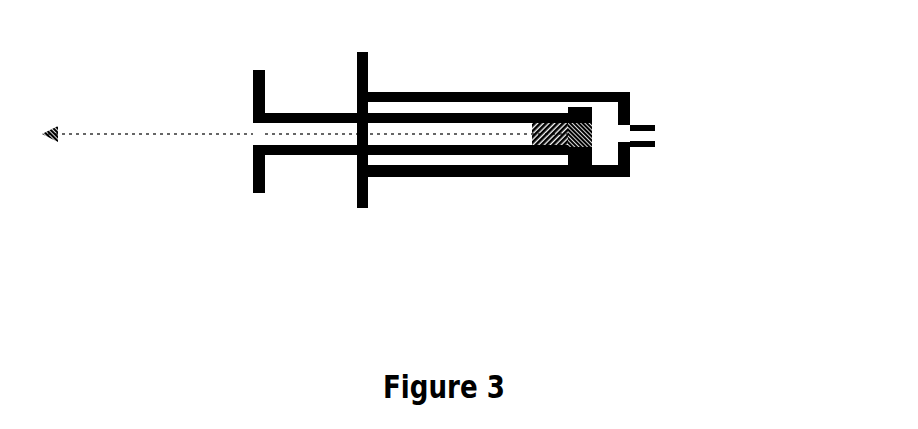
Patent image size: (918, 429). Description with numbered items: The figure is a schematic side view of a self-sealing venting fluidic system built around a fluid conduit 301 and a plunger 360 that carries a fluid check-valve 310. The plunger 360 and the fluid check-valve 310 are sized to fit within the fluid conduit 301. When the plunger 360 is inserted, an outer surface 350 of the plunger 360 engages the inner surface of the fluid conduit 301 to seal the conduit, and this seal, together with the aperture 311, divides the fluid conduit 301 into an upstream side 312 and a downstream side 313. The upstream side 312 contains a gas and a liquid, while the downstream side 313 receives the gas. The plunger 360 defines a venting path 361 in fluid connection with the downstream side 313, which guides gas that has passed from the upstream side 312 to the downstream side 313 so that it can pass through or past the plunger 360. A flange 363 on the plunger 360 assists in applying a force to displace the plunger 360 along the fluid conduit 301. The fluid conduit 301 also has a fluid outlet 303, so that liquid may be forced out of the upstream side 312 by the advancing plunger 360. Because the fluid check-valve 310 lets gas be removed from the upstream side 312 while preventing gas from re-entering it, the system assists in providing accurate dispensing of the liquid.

The fluid conduit 301 is at (527, 93).
The fluid outlet 303 is at (663, 134).
The fluid check-valve 310 is at (557, 157).
The aperture 311 is at (592, 137).
The upstream side 312 is at (608, 125).
The downstream side 313 is at (497, 135).
The outer surface 350 is at (580, 165).
The plunger 360 is at (445, 156).
The venting path 361 is at (255, 133).
The flange 363 is at (253, 181).